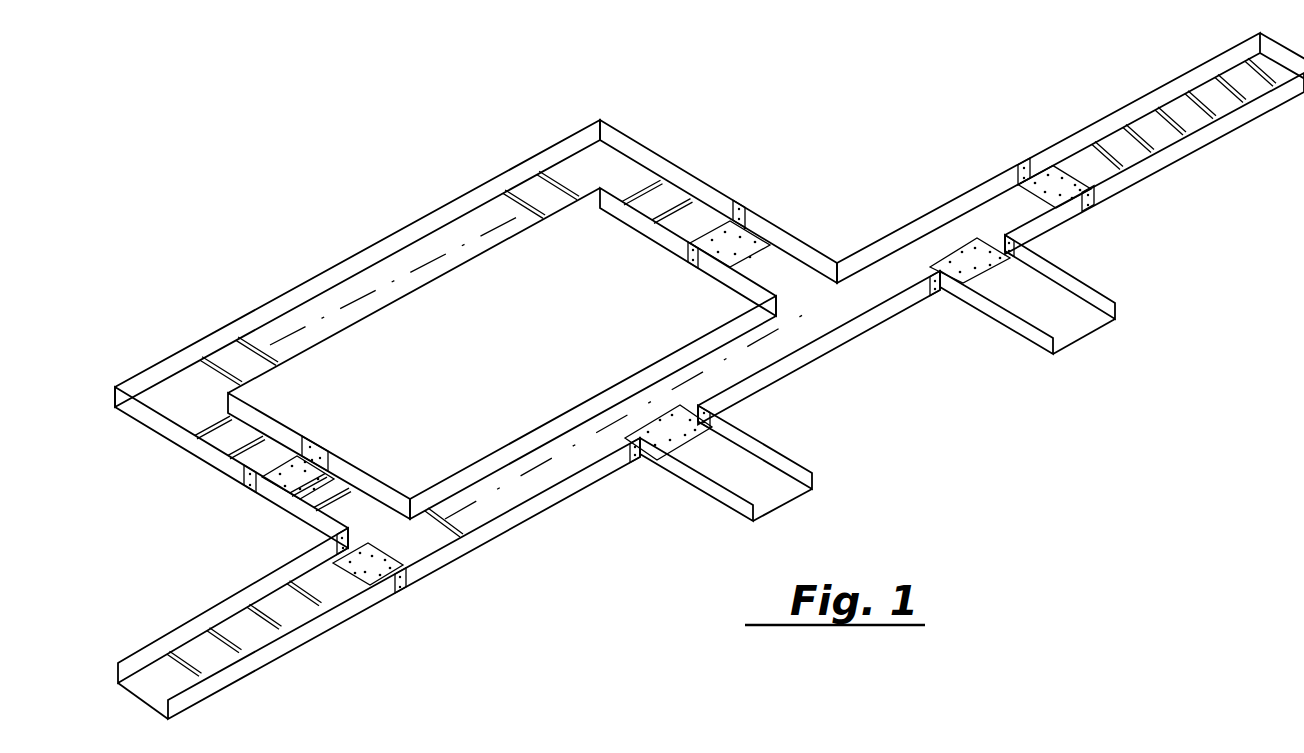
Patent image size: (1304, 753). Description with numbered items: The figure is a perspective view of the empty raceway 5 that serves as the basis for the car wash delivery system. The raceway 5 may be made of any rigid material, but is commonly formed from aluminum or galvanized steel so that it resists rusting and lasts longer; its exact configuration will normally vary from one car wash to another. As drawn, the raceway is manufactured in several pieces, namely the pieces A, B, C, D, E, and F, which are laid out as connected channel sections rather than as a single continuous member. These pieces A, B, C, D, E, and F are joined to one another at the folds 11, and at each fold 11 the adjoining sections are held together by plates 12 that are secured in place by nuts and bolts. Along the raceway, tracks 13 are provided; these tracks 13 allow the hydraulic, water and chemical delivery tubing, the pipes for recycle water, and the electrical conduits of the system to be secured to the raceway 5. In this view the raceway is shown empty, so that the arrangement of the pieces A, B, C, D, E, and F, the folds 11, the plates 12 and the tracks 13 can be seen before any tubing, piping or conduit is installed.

The raceway 5 is at (871, 204).
The folds 11 is at (683, 260).
The plates 12 is at (735, 230).
The tracks 13 is at (563, 199).
The raceway piece A is at (567, 408).
The raceway piece B is at (382, 241).
The raceway piece C is at (340, 628).
The raceway piece D is at (1101, 115).
The raceway piece E is at (803, 458).
The raceway piece F is at (1108, 282).